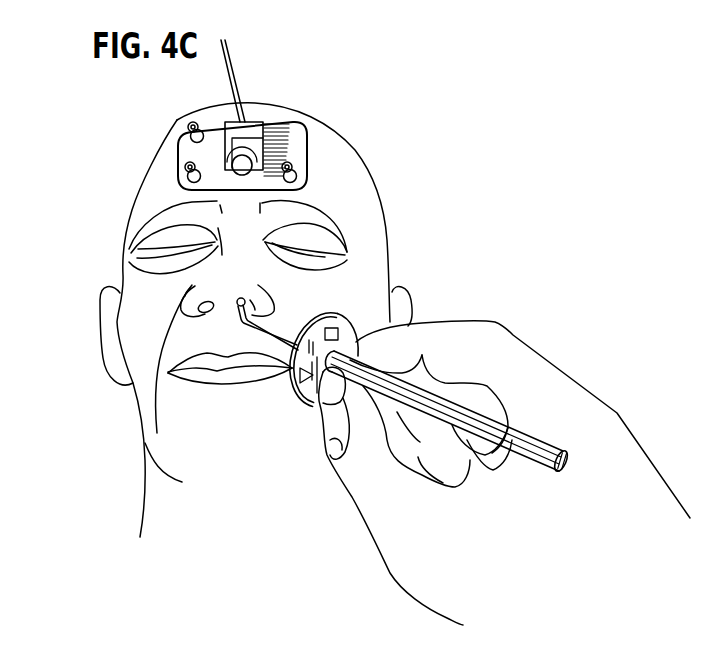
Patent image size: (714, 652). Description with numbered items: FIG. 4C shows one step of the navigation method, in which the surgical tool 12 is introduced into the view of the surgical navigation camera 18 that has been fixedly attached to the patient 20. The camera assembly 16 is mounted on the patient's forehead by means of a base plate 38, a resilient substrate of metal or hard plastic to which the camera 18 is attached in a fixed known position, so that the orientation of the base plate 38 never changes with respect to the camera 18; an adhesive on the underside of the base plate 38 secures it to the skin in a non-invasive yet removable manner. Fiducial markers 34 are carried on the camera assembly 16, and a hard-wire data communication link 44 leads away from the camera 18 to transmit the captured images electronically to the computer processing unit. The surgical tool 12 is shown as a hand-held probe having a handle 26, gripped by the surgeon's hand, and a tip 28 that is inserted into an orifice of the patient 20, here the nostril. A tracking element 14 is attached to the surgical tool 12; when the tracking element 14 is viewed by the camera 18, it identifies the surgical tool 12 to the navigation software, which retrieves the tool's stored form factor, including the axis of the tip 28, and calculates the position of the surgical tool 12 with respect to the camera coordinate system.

The surgical tool 12 is at (459, 380).
The tracking element 14 is at (403, 318).
The camera assembly 16 is at (276, 136).
The surgical navigation camera 18 is at (256, 122).
The patient 20 is at (358, 268).
The handle 26 is at (535, 437).
The tip 28 is at (243, 315).
The fiducial markers 34 is at (187, 170).
The base plate 38 is at (307, 186).
The data communication link 44 is at (235, 98).